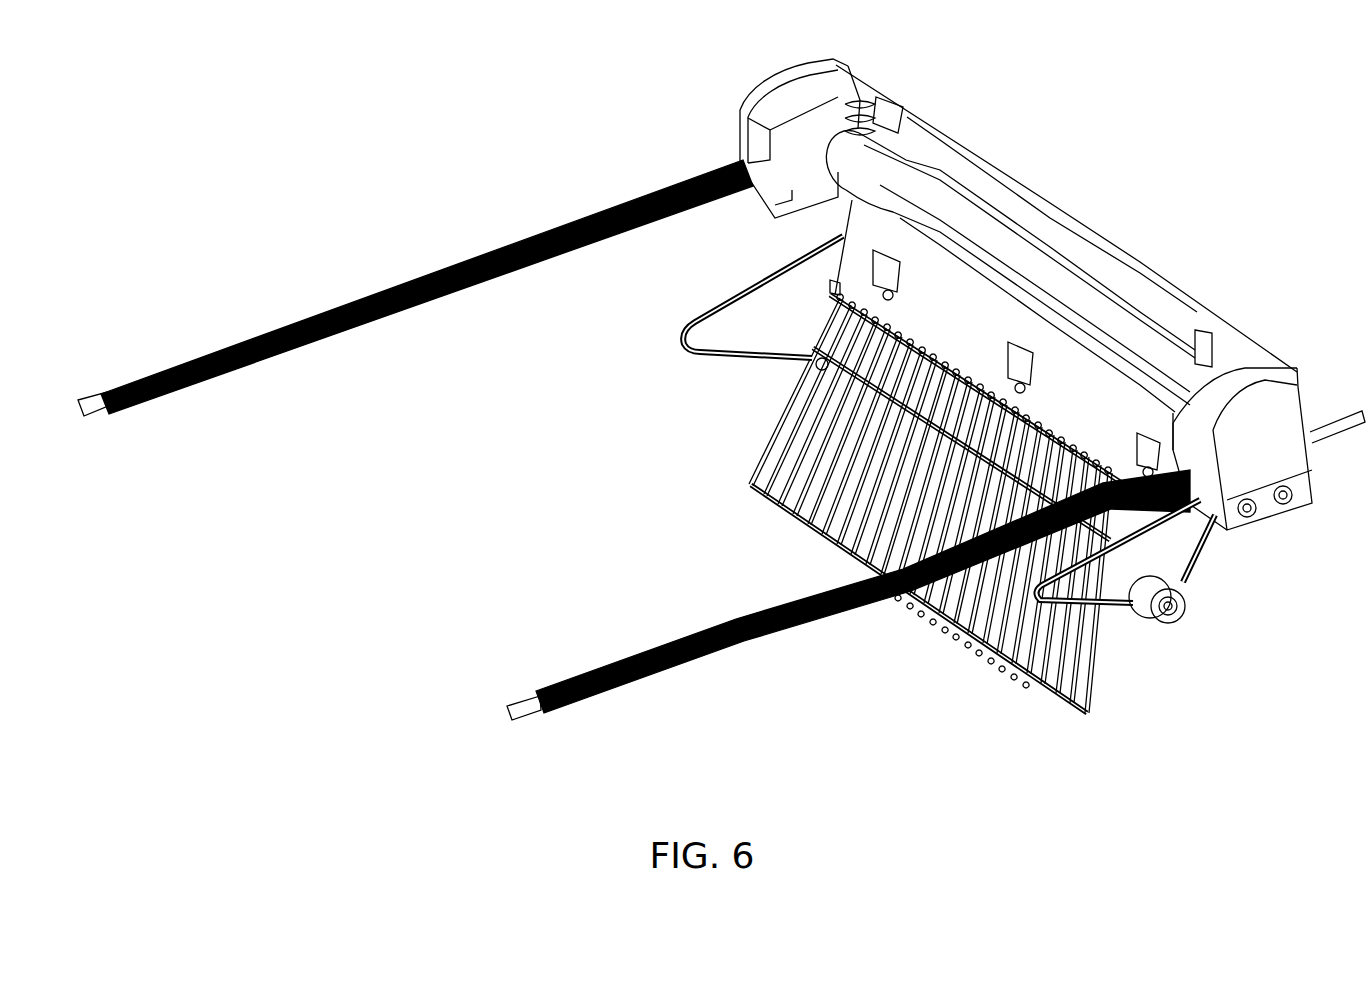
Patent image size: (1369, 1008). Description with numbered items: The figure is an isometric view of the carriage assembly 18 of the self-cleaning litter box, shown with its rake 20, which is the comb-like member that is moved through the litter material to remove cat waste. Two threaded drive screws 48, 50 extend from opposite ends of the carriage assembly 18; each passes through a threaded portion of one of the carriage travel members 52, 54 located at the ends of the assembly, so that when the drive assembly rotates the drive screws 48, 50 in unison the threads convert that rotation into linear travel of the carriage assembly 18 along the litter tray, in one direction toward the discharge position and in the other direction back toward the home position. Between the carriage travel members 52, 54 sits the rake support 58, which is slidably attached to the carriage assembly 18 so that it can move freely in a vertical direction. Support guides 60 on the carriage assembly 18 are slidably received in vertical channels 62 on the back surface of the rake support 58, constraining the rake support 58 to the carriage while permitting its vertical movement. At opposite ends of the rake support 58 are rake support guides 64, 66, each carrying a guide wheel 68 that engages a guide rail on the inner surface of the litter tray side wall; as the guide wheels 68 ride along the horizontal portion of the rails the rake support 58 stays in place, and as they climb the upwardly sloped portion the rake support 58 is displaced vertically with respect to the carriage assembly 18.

The carriage assembly 18 is at (1057, 207).
The rake 20 is at (987, 630).
The threaded drive screw 48 is at (318, 303).
The threaded drive screw 50 is at (630, 657).
The carriage travel member 52 is at (768, 95).
The carriage travel member 54 is at (1265, 508).
The rake support 58 is at (1055, 378).
The support guide 60 is at (905, 118).
The vertical channel 62 is at (907, 150).
The rake support guide 64 is at (675, 353).
The rake support guide 66 is at (1114, 580).
The guide wheel 68 is at (1186, 604).